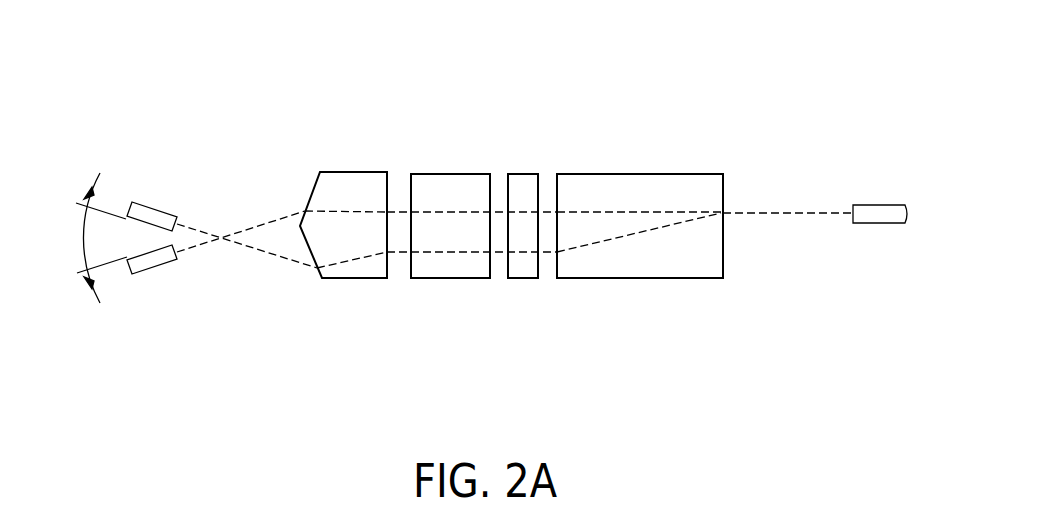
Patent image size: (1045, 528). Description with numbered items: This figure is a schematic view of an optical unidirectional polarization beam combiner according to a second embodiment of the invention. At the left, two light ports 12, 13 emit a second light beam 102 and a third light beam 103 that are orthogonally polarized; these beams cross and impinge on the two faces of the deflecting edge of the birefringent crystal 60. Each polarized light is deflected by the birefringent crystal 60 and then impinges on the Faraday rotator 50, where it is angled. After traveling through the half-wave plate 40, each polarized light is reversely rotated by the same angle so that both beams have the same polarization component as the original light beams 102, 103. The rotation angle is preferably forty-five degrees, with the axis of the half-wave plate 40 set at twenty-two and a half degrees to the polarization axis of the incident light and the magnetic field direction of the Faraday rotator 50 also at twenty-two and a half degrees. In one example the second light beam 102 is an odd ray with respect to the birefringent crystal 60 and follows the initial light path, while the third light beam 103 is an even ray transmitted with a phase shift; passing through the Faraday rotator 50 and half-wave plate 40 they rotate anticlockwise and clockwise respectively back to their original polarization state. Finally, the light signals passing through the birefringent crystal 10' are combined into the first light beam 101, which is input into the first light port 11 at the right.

The light port 13 is at (157, 205).
The light port 12 is at (156, 268).
The second light beam 102 is at (261, 222).
The third light beam 103 is at (260, 254).
The birefringent crystal 60 is at (318, 171).
The Faraday rotator 50 is at (452, 173).
The half-wave plate 40 is at (523, 173).
The birefringent crystal 10' is at (640, 258).
The first light beam 101 is at (795, 216).
The first light port 11 is at (881, 225).